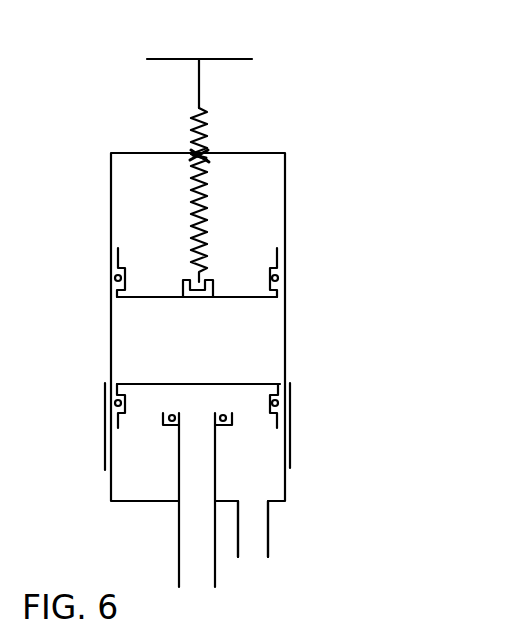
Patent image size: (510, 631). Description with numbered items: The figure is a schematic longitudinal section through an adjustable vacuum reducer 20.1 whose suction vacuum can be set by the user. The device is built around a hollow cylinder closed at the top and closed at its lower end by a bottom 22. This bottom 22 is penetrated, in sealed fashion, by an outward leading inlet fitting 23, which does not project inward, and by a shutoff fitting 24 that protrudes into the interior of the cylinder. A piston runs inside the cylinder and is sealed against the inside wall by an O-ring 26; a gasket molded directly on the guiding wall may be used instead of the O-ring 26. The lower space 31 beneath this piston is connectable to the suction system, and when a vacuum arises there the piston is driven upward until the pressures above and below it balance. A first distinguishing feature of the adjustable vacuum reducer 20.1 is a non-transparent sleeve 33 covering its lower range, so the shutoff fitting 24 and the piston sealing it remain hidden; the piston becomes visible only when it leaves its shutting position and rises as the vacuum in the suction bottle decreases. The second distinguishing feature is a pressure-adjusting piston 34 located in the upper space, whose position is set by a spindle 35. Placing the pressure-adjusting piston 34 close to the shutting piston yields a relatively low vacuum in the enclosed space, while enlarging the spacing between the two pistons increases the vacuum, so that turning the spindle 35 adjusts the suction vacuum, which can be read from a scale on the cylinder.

The adjustable vacuum reducer 20.1 is at (326, 63).
The spindle 35 is at (207, 114).
The bottom 22 is at (137, 503).
The pressure-adjusting piston 34 is at (158, 285).
The O-ring 26 is at (117, 279).
The lower space 31 is at (138, 350).
The non-transparent sleeve 33 is at (105, 461).
The shutoff fitting 24 is at (196, 557).
The inlet fitting 23 is at (253, 535).